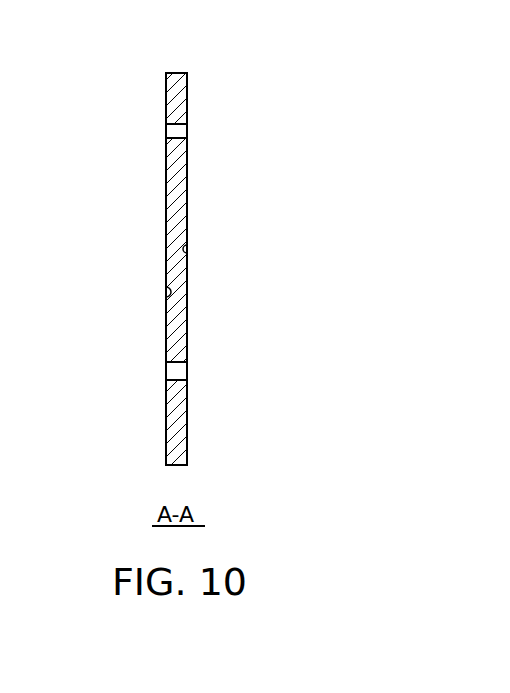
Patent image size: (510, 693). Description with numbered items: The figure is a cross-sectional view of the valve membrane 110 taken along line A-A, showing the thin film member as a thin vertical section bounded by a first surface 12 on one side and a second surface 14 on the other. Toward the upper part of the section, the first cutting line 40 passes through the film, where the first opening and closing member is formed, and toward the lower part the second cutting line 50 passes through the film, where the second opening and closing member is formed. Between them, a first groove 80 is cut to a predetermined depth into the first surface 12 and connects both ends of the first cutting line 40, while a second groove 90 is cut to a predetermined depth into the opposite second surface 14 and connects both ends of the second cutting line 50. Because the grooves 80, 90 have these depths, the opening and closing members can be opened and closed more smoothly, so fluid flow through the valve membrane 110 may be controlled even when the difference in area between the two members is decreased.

The valve membrane 110 is at (239, 107).
The first surface 12 is at (188, 194).
The second surface 14 is at (165, 332).
The first cutting line 40 is at (170, 132).
The second cutting line 50 is at (167, 372).
The first groove 80 is at (190, 246).
The second groove 90 is at (166, 292).